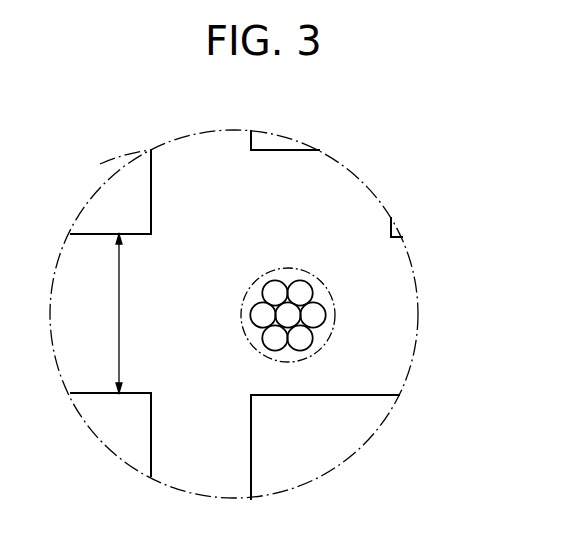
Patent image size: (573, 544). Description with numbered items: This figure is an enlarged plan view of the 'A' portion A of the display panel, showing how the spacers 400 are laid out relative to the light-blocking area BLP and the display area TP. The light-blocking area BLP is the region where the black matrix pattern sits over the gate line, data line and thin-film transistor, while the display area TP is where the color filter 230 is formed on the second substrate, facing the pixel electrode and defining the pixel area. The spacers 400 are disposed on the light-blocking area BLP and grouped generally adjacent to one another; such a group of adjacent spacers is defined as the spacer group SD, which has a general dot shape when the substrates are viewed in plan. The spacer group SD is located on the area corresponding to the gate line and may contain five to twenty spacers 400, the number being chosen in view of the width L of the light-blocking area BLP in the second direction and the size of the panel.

The color filter 230 is at (363, 196).
The spacers 400 is at (301, 296).
The light-blocking area BLP is at (410, 312).
The spacer group SD is at (331, 339).
The display area TP is at (347, 445).
The 'A' portion A is at (107, 187).
The width of the light-blocking area L is at (111, 313).